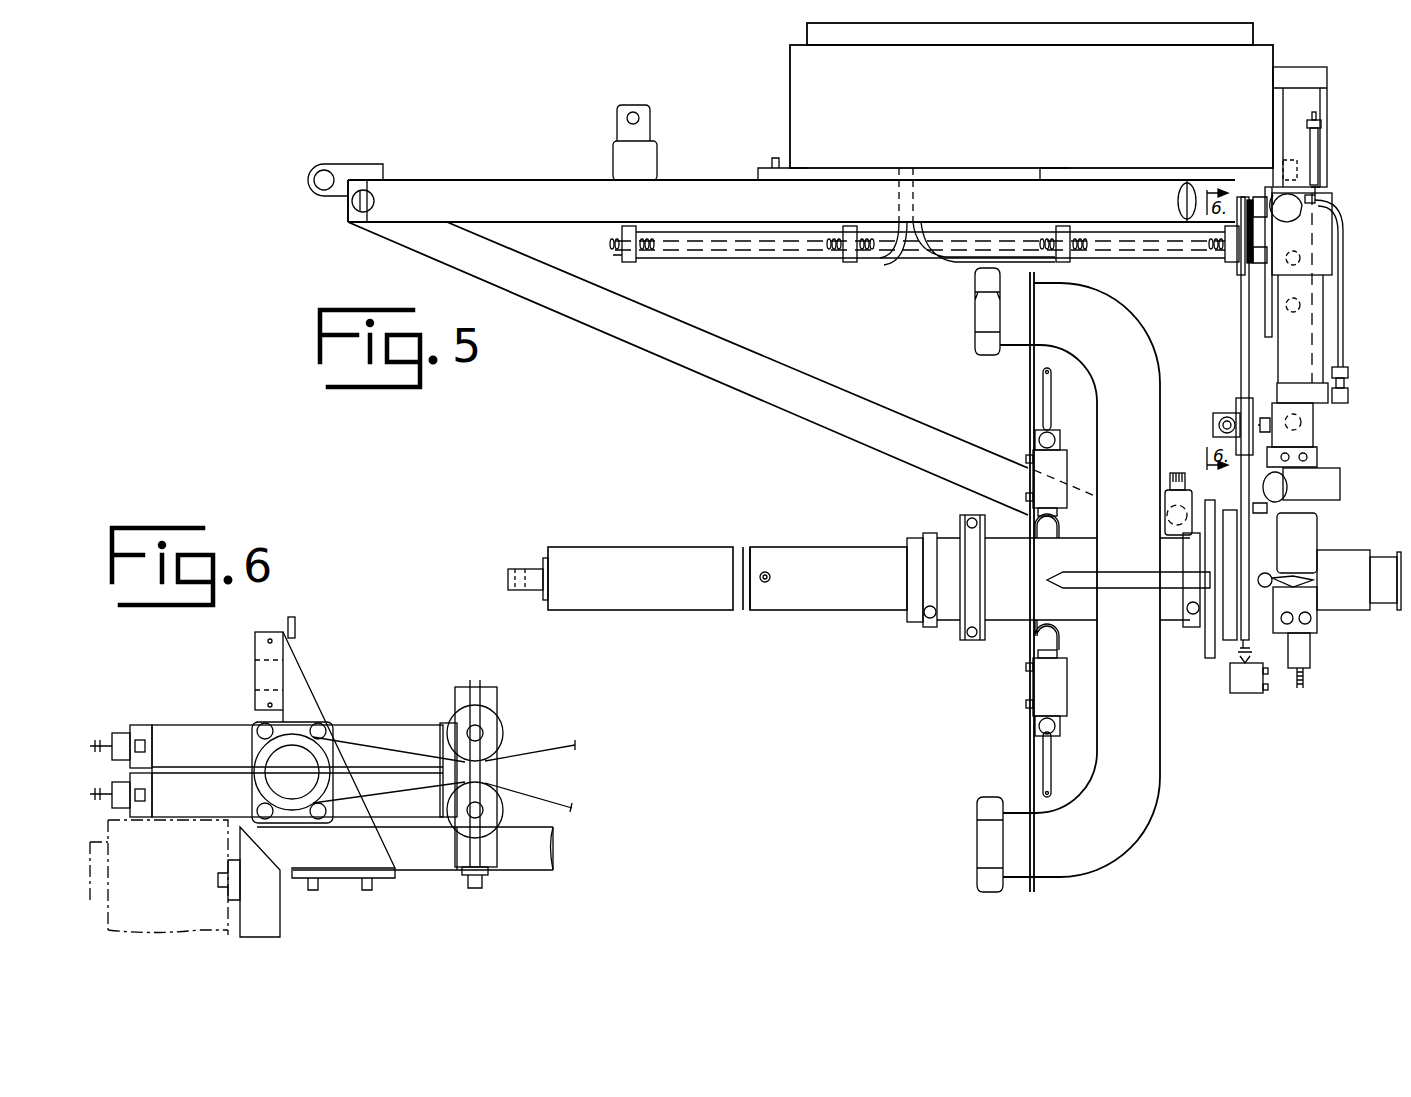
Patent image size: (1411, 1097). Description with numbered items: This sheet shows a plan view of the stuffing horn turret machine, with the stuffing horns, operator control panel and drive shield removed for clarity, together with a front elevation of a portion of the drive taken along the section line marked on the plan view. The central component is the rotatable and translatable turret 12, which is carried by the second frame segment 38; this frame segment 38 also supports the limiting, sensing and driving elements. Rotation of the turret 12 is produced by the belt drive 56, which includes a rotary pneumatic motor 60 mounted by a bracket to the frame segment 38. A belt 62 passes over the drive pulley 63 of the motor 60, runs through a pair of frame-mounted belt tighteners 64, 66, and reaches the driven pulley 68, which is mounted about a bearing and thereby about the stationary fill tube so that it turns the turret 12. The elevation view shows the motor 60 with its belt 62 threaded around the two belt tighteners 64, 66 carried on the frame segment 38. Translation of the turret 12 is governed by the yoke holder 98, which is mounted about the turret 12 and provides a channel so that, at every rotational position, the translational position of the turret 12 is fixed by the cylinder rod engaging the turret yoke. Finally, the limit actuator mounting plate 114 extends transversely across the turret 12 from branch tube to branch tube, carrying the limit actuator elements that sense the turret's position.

In FIG. 5, the turret 12 is at (942, 615).
In FIG. 6, the second frame segment 38 is at (422, 858).
In FIG. 5, the belt drive 56 is at (1232, 367).
In FIG. 5, the rotary pneumatic motor 60 is at (1322, 225).
In FIG. 6, the rotary pneumatic motor 60 is at (180, 720).
In FIG. 5, the belt 62 is at (1242, 332).
In FIG. 6, the belt 62 is at (246, 750).
In FIG. 5, the drive pulley 63 is at (1240, 260).
In FIG. 5, the belt tightener 64 is at (1286, 413).
In FIG. 6, the belt tightener 64 is at (503, 725).
In FIG. 6, the belt tightener 66 is at (507, 808).
In FIG. 5, the driven pulley 68 is at (1232, 645).
In FIG. 5, the yoke holder 98 is at (978, 642).
In FIG. 5, the limit actuator mounting plate 114 is at (1028, 370).